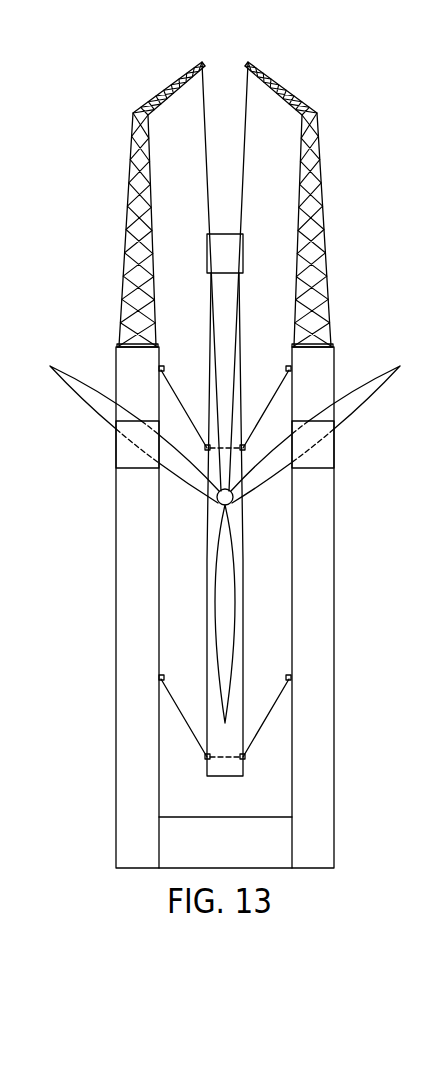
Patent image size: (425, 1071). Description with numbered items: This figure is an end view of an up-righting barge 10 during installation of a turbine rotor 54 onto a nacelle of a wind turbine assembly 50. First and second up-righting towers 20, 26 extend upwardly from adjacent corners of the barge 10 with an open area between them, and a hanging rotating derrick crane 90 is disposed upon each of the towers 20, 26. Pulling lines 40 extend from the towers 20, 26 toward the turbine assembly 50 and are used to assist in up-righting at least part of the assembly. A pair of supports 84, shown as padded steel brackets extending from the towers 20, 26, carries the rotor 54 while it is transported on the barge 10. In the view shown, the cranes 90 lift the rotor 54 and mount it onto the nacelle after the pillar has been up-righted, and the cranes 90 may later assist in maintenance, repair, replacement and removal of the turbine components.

The up-righting barge 10 is at (220, 607).
The first up-righting tower 20 is at (128, 603).
The second up-righting tower 26 is at (320, 603).
The pulling line 40 is at (171, 384).
The wind turbine assembly 50 is at (251, 577).
The rotor 54 is at (64, 366).
The supports 84 is at (127, 452).
The hanging rotating derrick crane 90 is at (128, 133).